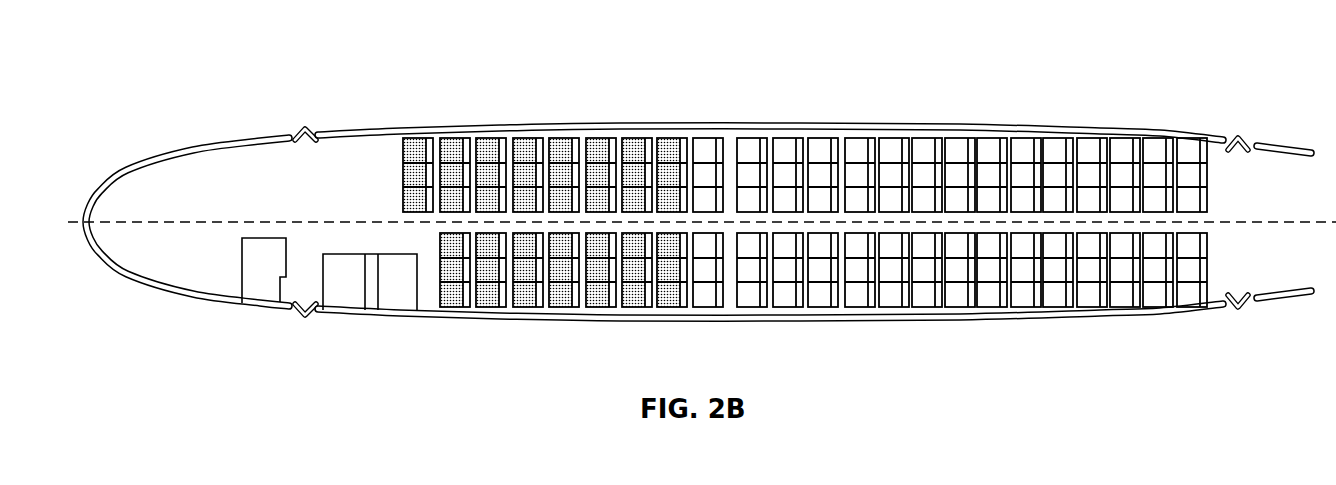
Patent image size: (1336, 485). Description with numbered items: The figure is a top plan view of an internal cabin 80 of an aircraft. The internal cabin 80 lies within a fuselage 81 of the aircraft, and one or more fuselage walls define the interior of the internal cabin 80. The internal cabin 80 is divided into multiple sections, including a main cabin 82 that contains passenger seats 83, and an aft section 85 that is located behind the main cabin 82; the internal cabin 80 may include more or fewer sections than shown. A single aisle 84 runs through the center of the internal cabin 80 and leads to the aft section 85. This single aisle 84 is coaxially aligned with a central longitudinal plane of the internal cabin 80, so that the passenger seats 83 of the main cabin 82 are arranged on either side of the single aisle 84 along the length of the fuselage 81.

The internal cabin 80 is at (321, 71).
The fuselage 81 is at (512, 128).
The main cabin 82 is at (454, 156).
The passenger seats 83 is at (707, 157).
The single aisle 84 is at (822, 217).
The aft section 85 is at (1224, 158).